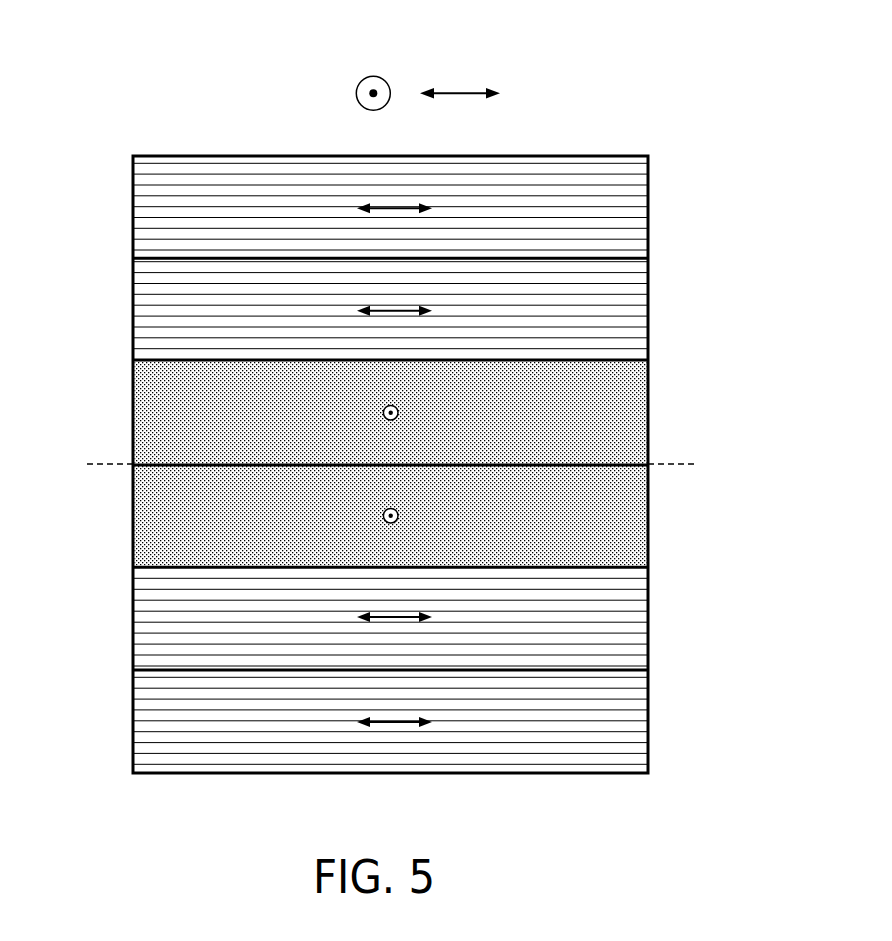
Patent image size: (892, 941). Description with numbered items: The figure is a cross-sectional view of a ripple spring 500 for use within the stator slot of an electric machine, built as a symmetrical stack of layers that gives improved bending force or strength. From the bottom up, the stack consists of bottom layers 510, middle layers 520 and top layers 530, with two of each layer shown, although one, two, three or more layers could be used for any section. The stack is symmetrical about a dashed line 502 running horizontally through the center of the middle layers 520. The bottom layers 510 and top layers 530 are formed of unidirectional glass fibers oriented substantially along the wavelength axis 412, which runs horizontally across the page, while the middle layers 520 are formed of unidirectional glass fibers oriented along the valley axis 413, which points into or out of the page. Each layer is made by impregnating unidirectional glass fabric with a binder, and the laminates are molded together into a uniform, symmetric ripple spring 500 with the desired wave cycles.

The ripple spring 500 is at (623, 100).
The top layers 530 is at (648, 227).
The middle layers 520 is at (648, 432).
The bottom layers 510 is at (648, 637).
The dashed line 502 is at (97, 463).
The valley axis 413 is at (356, 95).
The wavelength axis 412 is at (463, 92).